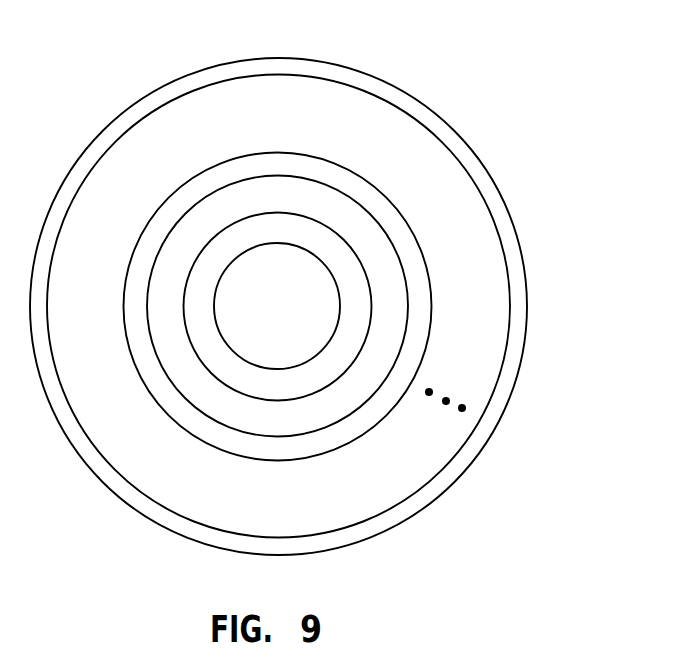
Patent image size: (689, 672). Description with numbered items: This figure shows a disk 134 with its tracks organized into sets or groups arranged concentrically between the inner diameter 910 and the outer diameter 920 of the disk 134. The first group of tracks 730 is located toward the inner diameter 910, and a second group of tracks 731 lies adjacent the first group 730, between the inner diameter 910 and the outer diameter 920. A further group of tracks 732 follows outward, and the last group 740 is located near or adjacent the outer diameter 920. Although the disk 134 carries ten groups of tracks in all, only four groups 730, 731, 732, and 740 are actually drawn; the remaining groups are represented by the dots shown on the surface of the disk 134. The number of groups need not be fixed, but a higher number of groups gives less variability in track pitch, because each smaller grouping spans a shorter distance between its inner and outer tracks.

The disk 134 is at (96, 62).
The inner diameter 910 is at (299, 247).
The outer diameter 920 is at (438, 118).
The first group of tracks 730 is at (347, 267).
The second group of tracks 731 is at (388, 277).
The third group of tracks 732 is at (422, 305).
The last group of tracks 740 is at (465, 460).